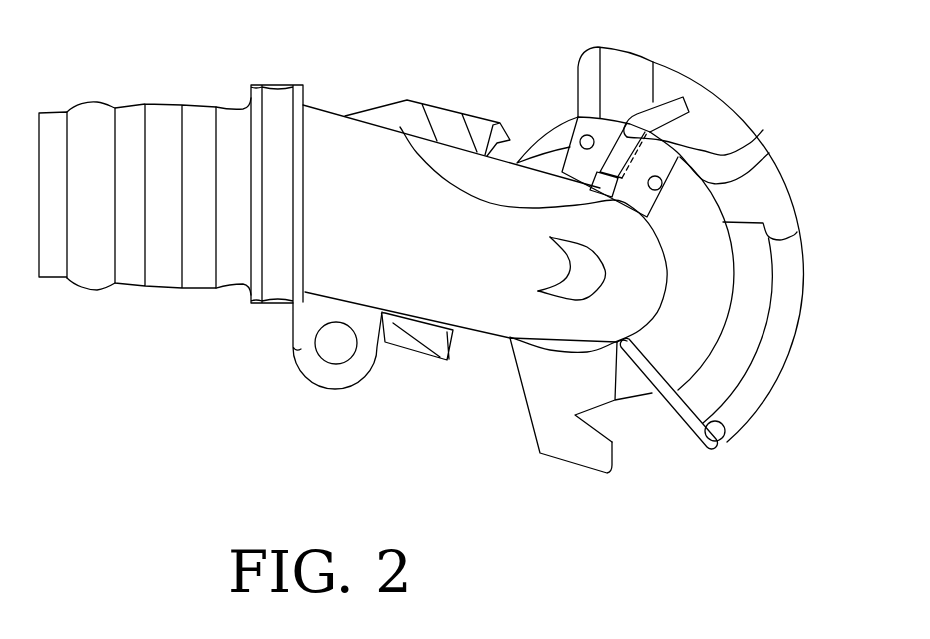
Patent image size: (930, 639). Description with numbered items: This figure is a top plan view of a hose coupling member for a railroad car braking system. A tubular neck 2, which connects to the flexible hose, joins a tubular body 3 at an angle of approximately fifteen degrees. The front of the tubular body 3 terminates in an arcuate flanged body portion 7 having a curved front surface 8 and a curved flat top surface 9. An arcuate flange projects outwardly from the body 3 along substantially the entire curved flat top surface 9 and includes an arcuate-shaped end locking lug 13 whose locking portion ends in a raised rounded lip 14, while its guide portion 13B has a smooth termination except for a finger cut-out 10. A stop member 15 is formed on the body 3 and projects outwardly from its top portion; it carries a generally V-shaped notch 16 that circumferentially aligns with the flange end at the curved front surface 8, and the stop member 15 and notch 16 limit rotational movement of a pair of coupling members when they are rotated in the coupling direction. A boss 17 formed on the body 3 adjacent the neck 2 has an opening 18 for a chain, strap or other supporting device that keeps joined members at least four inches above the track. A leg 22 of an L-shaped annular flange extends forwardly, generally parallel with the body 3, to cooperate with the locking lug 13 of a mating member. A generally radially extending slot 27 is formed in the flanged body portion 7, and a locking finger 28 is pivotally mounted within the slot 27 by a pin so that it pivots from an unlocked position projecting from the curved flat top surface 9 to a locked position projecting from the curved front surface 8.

The tubular neck 2 is at (131, 115).
The tubular body 3 is at (413, 300).
The arcuate flanged body portion 7 is at (668, 355).
The curved front surface 8 is at (753, 147).
The curved flat top surface 9 is at (707, 289).
The finger cut-out 10 is at (713, 115).
The end locking lug 13 is at (770, 393).
The guide portion 13B is at (773, 203).
The raised rounded lip 14 is at (722, 447).
The stop member 15 is at (574, 455).
The V-shaped notch 16 is at (603, 418).
The boss 17 is at (342, 373).
The opening 18 is at (325, 352).
The leg 22 is at (478, 130).
The radially extending slot 27 is at (405, 132).
The locking finger 28 is at (662, 100).